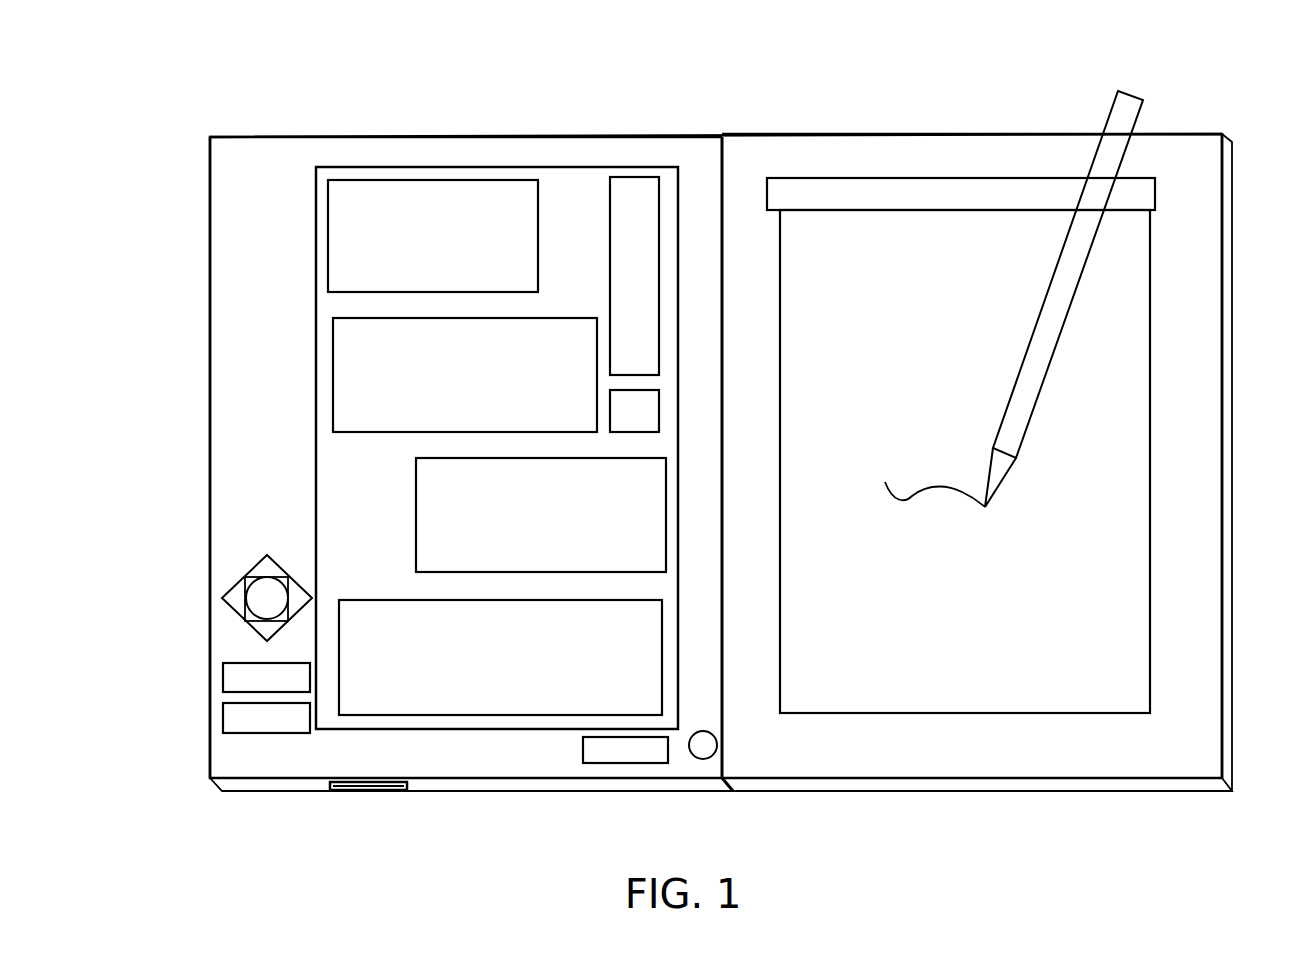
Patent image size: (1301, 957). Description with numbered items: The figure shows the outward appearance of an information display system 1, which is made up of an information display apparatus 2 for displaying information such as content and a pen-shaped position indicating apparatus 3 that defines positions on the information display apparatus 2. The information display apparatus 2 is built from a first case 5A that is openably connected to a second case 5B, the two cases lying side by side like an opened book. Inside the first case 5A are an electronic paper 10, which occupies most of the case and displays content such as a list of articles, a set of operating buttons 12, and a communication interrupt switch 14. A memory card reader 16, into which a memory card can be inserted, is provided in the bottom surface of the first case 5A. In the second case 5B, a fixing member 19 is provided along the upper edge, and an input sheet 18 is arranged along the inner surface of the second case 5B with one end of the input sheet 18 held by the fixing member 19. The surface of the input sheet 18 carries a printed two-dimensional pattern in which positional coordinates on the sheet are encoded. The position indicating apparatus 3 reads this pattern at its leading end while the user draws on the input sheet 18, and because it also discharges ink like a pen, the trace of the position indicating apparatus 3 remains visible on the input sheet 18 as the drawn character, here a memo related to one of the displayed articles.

The information display system 1 is at (918, 68).
The information display apparatus 2 is at (627, 124).
The position indicating apparatus 3 is at (1092, 121).
The first case 5A is at (255, 137).
The second case 5B is at (1210, 577).
The electronic paper 10 is at (315, 255).
The operating buttons 12 is at (206, 682).
The communication interrupt switch 14 is at (704, 760).
The memory card reader 16 is at (401, 793).
The input sheet 18 is at (1147, 270).
The fixing member 19 is at (1137, 172).